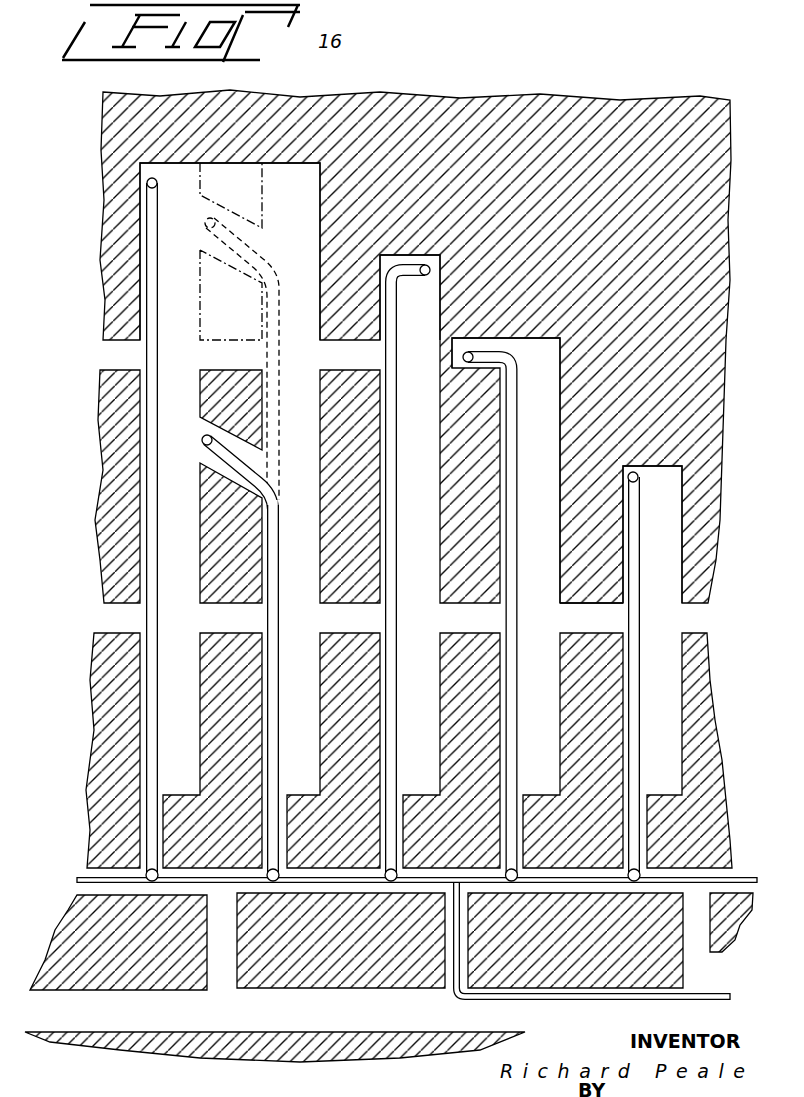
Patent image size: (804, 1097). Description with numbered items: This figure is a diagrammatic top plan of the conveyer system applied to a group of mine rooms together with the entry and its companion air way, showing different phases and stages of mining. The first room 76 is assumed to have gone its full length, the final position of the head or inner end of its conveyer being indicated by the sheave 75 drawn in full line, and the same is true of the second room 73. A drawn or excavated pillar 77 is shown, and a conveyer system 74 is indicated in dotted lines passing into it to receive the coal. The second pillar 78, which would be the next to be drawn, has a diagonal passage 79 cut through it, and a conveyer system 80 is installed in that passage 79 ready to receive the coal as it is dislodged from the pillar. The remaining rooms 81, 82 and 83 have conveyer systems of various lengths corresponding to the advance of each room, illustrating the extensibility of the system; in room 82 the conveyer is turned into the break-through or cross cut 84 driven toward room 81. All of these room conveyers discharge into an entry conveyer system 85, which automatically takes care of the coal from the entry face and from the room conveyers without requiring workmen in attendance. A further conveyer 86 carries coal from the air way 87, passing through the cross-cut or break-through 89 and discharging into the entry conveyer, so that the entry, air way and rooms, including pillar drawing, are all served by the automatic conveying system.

The second room 73 is at (320, 203).
The conveyer system in drawn pillar 74 is at (238, 245).
The sheave 75 is at (157, 183).
The first room 76 is at (173, 562).
The drawn pillar 77 is at (250, 190).
The second pillar 78 is at (248, 430).
The diagonal passage 79 is at (256, 455).
The conveyer system 80 is at (283, 500).
The room 81 is at (428, 316).
The room 82 is at (551, 455).
The room 83 is at (673, 542).
The break-through or cross cut 84 is at (487, 346).
The entry conveyer system 85 is at (226, 884).
The conveyer 86 is at (388, 953).
The air way 87 is at (395, 1022).
The cross-cut or break-through 89 is at (465, 958).